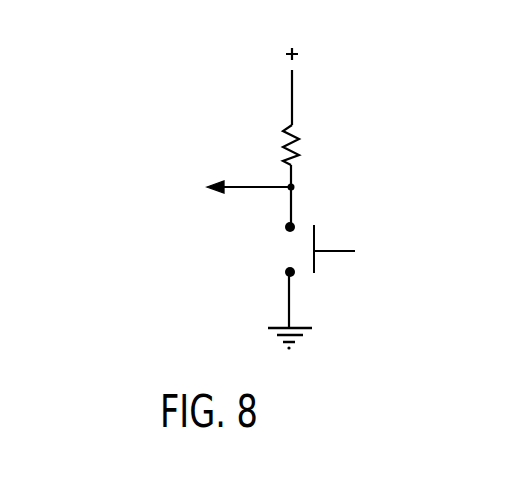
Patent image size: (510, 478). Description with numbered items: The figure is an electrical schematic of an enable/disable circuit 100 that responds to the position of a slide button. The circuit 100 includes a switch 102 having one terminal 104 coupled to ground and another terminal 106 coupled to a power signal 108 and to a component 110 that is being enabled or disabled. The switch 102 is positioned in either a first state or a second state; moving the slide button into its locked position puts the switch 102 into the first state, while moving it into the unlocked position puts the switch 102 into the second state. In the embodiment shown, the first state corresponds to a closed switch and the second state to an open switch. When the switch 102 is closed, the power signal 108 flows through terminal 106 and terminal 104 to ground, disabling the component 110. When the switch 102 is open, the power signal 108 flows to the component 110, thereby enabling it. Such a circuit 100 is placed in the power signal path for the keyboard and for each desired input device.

The enable/disable circuit 100 is at (352, 136).
The switch 102 is at (343, 251).
The terminal 104 is at (295, 272).
The terminal 106 is at (295, 222).
The power signal 108 is at (293, 104).
The component 110 is at (175, 195).